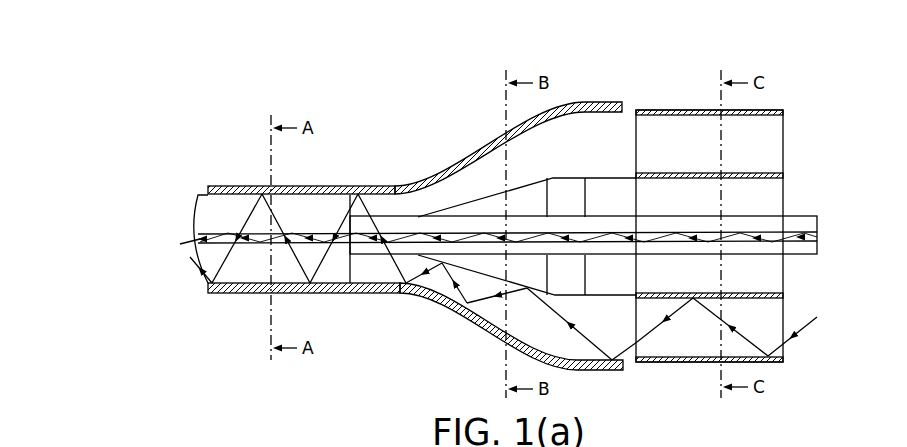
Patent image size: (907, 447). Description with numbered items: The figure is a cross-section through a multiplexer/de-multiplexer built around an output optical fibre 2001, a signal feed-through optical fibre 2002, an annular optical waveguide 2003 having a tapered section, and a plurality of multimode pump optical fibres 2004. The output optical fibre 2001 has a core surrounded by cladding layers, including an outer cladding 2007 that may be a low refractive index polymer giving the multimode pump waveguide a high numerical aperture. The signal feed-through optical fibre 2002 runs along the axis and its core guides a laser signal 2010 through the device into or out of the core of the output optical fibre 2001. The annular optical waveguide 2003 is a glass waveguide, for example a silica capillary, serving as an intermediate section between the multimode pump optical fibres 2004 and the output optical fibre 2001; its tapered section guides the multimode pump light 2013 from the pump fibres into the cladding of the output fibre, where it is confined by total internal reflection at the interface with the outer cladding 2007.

The output optical fibre 2001 is at (199, 206).
The signal feed-through optical fibre 2002 is at (806, 220).
The annular optical waveguide 2003 is at (468, 178).
The multimode pump optical fibres 2004 is at (773, 133).
The outer cladding 2007 is at (367, 294).
The laser signal 2010 is at (783, 238).
The multimode pump light 2013 is at (811, 324).